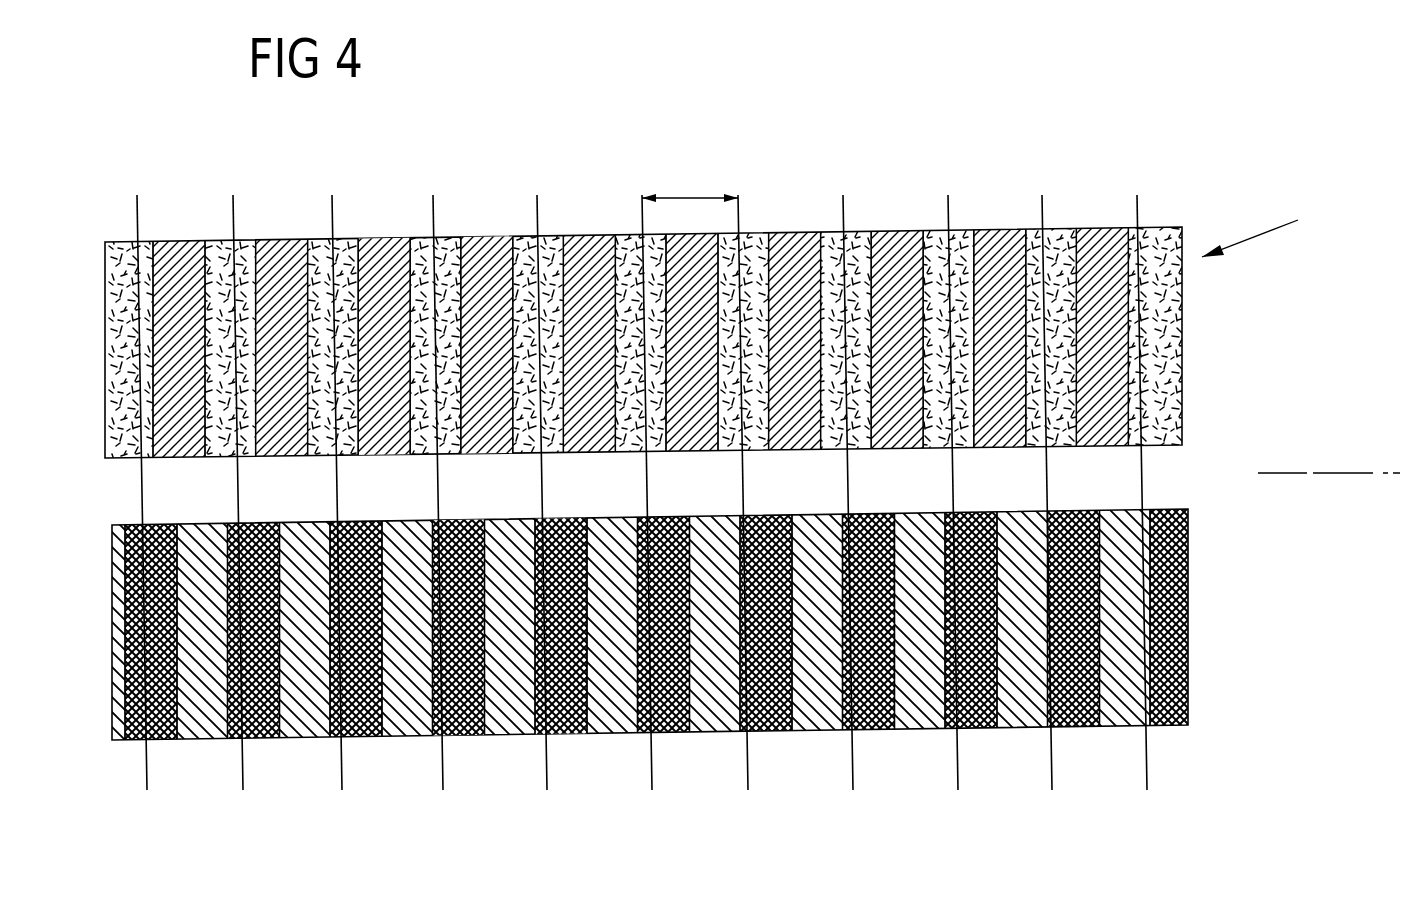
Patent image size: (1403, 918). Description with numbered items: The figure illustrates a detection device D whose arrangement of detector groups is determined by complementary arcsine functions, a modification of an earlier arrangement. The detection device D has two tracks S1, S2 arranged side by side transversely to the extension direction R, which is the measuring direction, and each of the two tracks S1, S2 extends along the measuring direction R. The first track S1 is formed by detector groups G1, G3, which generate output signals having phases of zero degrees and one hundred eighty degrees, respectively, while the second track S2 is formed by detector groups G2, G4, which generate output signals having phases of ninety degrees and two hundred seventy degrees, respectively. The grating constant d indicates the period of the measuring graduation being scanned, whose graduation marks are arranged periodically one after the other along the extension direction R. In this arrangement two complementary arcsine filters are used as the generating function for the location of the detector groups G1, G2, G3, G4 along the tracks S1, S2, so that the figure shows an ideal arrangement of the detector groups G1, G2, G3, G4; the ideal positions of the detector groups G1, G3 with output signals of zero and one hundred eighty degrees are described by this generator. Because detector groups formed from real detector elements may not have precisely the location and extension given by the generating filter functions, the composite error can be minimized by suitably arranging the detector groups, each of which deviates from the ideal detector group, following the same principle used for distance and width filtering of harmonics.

The detector group G1 is at (288, 242).
The detector group G2 is at (333, 735).
The detector group G3 is at (568, 235).
The detector group G4 is at (610, 688).
The first track S1 is at (1182, 372).
The second track S2 is at (1192, 622).
The detection device D is at (1269, 229).
The extension direction R is at (1329, 455).
The grating constant d is at (690, 185).